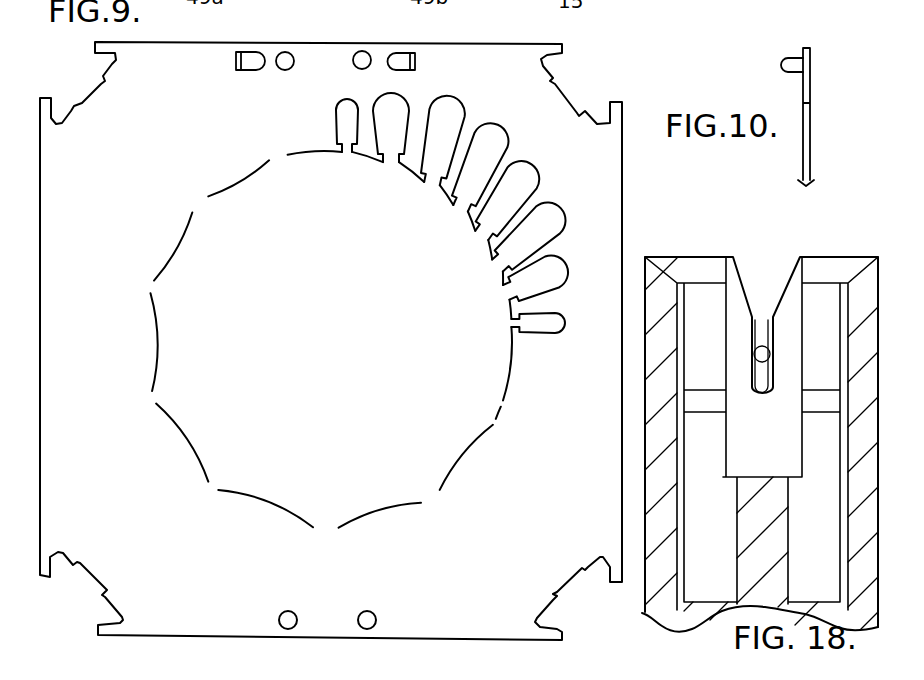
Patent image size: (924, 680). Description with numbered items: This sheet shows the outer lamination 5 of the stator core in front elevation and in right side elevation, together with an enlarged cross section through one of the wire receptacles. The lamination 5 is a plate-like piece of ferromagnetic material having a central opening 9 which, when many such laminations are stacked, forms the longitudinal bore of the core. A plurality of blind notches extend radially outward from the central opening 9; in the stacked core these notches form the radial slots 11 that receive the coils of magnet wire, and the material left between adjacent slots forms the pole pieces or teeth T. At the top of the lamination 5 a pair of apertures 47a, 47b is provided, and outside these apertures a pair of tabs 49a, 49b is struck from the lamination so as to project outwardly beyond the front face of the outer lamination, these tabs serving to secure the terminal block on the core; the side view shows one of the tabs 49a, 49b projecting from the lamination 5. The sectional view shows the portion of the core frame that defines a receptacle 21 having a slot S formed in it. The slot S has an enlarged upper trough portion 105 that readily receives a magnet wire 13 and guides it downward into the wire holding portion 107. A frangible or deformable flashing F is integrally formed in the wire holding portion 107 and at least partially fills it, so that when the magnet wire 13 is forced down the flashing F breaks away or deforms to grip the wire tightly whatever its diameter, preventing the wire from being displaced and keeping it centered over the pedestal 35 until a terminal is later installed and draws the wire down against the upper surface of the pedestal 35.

In FIG. 9, the lamination 5 is at (598, 242).
In FIG. 10, the lamination 5 is at (803, 144).
In FIG. 9, the central opening 9 is at (493, 272).
In FIG. 9, the radial slots 11 is at (548, 167).
In FIG. 9, the teeth T is at (478, 234).
In FIG. 9, the aperture 47a is at (285, 51).
In FIG. 9, the aperture 47b is at (359, 51).
In FIG. 9, the tab 49a is at (236, 59).
In FIG. 10, the tab 49a is at (750, 75).
In FIG. 9, the tab 49b is at (415, 60).
In FIG. 10, the tab 49b is at (782, 61).
In FIG. 18, the magnet wire 13 is at (754, 383).
In FIG. 18, the flashing F is at (755, 389).
In FIG. 18, the slot S is at (762, 318).
In FIG. 18, the receptacle 21 is at (825, 304).
In FIG. 18, the pedestal 35 is at (748, 477).
In FIG. 18, the upper trough portion 105 is at (786, 273).
In FIG. 18, the wire holding portion 107 is at (774, 372).